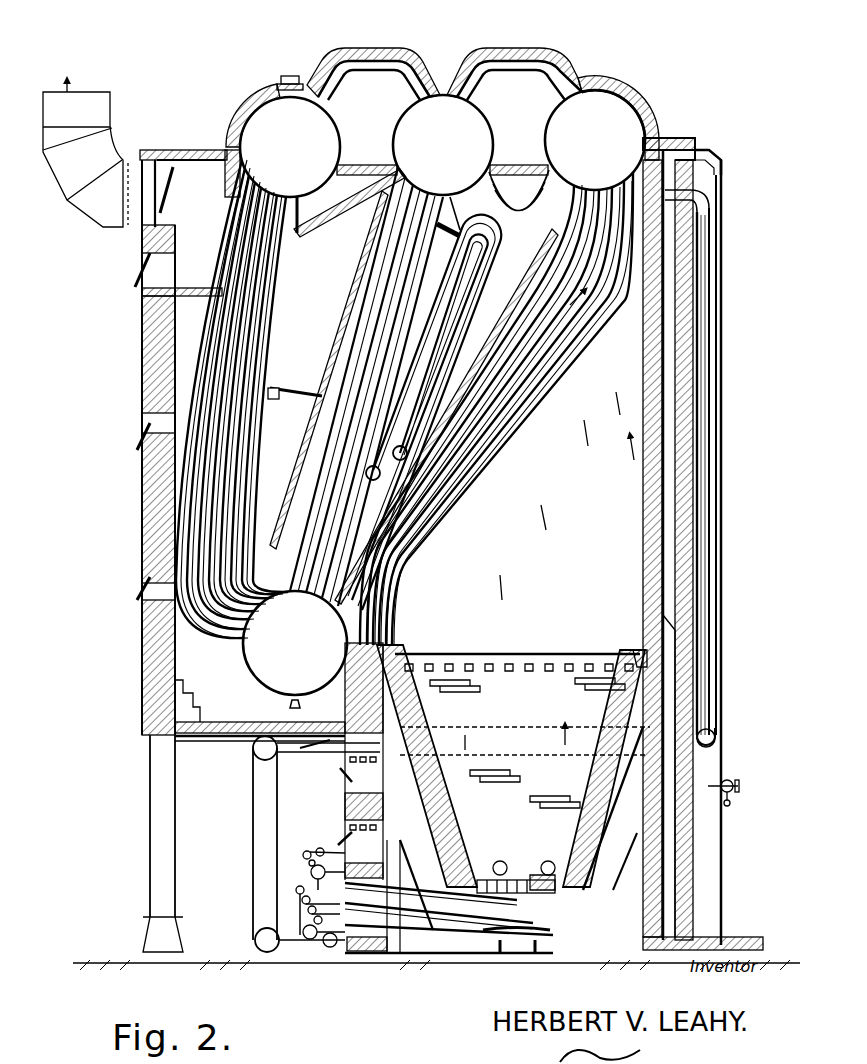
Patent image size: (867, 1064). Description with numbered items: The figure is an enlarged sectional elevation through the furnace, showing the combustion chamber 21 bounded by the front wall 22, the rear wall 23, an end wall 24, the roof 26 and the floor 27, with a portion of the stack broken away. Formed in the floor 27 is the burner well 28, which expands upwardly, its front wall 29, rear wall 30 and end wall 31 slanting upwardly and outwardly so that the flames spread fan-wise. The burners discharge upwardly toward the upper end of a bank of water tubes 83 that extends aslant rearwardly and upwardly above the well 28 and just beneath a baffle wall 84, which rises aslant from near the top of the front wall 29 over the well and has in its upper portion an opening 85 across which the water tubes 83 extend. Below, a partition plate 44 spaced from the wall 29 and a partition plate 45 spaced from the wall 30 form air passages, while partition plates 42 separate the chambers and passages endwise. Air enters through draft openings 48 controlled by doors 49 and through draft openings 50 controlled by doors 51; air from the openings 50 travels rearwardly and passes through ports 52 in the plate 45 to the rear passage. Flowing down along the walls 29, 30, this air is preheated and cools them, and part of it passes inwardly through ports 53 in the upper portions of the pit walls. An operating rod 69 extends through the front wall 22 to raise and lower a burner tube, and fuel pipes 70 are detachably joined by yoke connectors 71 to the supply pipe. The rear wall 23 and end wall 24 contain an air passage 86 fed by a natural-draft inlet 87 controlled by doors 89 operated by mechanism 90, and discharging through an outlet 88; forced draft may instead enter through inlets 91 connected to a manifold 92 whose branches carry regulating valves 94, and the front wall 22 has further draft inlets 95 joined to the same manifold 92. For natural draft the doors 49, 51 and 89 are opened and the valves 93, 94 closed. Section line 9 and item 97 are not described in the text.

The section line 9 is at (262, 675).
The combustion chamber 21 is at (560, 445).
The front wall 22 is at (150, 353).
The rear wall 23 is at (683, 370).
The end wall 24 is at (630, 432).
The roof 26 is at (516, 165).
The floor 27 is at (220, 717).
The burner well 28 is at (525, 743).
The front wall of the pit 29 is at (440, 835).
The rear wall of the pit 30 is at (585, 830).
The end wall of the pit 31 is at (522, 653).
The partition plates 42 is at (735, 805).
The partition plate 44 is at (415, 830).
The partition plate 45 is at (612, 810).
The draft openings 48 is at (360, 798).
The doors 49 is at (340, 776).
The draft openings 50 is at (353, 845).
The doors 51 is at (345, 845).
The ports 52 is at (640, 856).
The ports 53 is at (640, 658).
The operating rod 69 is at (300, 895).
The fuel pipes 70 is at (412, 885).
The yoke connectors 71 is at (308, 873).
The bank of water tubes 83 is at (430, 490).
The baffle wall 84 is at (528, 275).
The opening 85 is at (650, 222).
The air passage 86 is at (668, 508).
The draft inlet 87 is at (680, 157).
The outlet 88 is at (667, 928).
The doors 89 is at (710, 150).
The door operating mechanism 90 is at (723, 300).
The draft inlets 91 is at (692, 196).
The manifold 92 is at (713, 258).
The valves 93 is at (713, 640).
The regulating valves 94 is at (262, 763).
The draft inlets 95 is at (390, 700).
The valve 97 is at (282, 925).